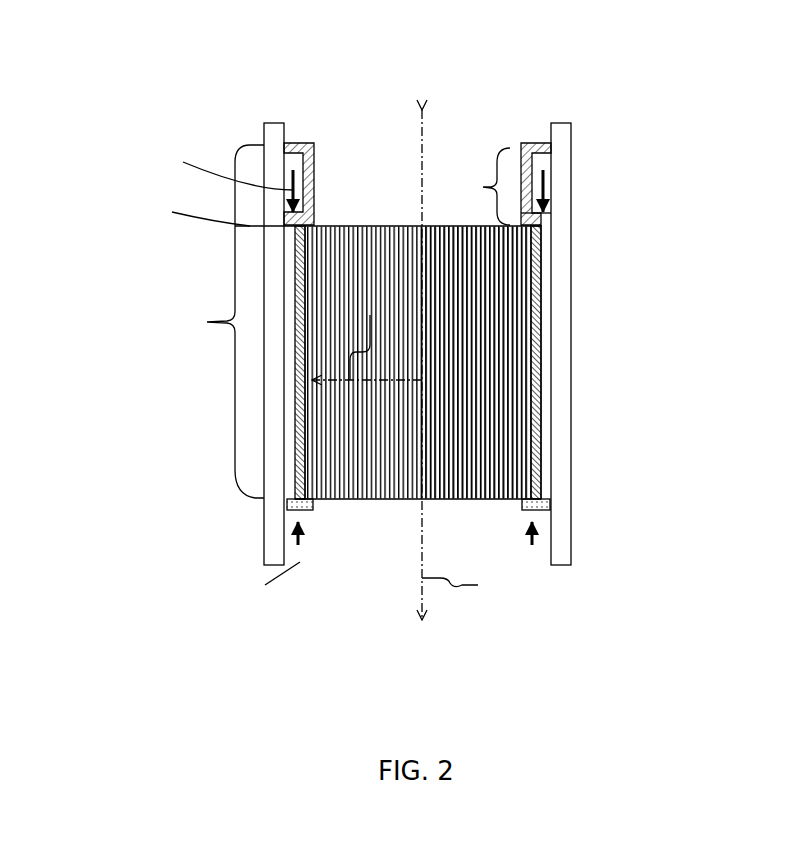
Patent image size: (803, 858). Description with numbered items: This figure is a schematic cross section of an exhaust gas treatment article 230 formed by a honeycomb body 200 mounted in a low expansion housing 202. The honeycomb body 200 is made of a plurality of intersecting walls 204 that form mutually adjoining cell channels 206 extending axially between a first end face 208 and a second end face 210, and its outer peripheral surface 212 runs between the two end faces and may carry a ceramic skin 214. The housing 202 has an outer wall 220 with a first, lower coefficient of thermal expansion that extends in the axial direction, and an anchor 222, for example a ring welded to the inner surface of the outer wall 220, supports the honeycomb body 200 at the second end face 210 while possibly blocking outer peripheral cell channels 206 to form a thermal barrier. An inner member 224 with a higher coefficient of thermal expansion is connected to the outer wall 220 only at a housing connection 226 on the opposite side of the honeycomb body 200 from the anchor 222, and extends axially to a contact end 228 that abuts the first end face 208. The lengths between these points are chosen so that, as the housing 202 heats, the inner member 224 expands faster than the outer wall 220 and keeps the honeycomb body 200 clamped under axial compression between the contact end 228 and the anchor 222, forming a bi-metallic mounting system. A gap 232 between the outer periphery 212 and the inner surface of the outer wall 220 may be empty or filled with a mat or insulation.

The honeycomb body 200 is at (367, 357).
The low expansion housing 202 is at (347, 366).
The intersecting walls 204 is at (472, 361).
The cell channels 206 is at (500, 257).
The first end face 208 is at (355, 214).
The second end face 210 is at (358, 509).
The outer peripheral surface 212 is at (595, 362).
The ceramic skin 214 is at (537, 337).
The outer wall 220 is at (560, 388).
The anchor 222 is at (287, 500).
The inner member 224 is at (558, 151).
The housing connection 226 is at (552, 148).
The contact end 228 is at (543, 223).
The exhaust gas treatment article 230 is at (367, 322).
The gap 232 is at (547, 300).